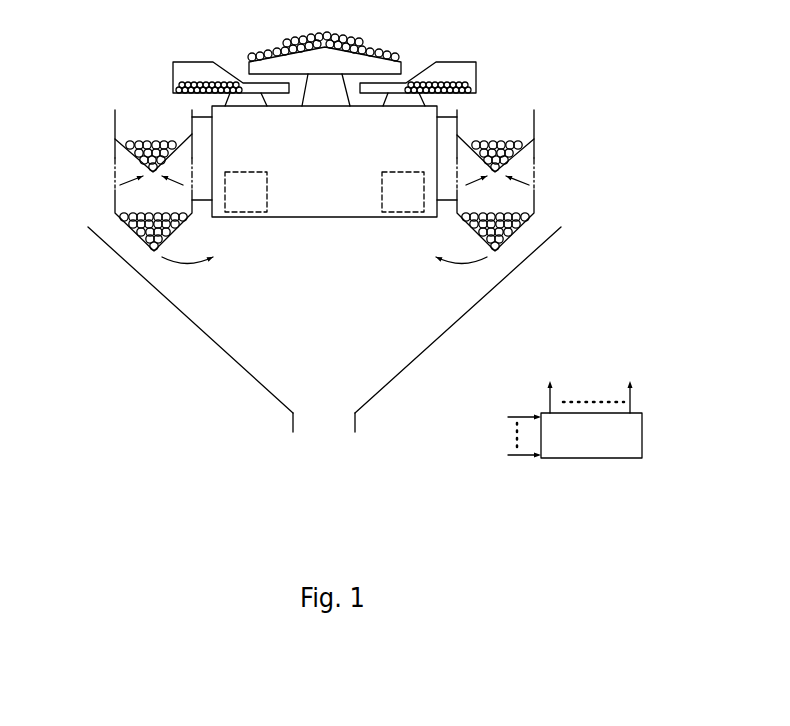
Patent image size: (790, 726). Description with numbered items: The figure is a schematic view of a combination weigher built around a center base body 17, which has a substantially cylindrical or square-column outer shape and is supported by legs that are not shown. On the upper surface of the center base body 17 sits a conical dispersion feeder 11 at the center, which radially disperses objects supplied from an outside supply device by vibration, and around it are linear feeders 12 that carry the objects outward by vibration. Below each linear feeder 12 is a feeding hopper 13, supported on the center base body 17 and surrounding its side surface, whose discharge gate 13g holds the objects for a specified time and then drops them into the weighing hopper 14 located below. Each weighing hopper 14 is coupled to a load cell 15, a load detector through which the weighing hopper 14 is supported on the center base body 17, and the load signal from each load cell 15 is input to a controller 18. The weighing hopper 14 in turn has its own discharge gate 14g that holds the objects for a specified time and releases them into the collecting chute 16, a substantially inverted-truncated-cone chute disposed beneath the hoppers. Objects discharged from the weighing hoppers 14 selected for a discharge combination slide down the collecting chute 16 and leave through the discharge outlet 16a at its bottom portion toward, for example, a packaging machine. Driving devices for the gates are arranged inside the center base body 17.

The dispersion feeder 11 is at (362, 62).
The linear feeder 12 is at (185, 66).
The feeding hopper 13 is at (115, 122).
The discharge gate 13g is at (119, 160).
The weighing hopper 14 is at (116, 196).
The weighing hopper gate 14g is at (192, 213).
The load cell 15 is at (267, 198).
The collecting chute 16 is at (485, 298).
The discharge outlet 16a is at (314, 436).
The center base body 17 is at (325, 217).
The controller 18 is at (642, 433).